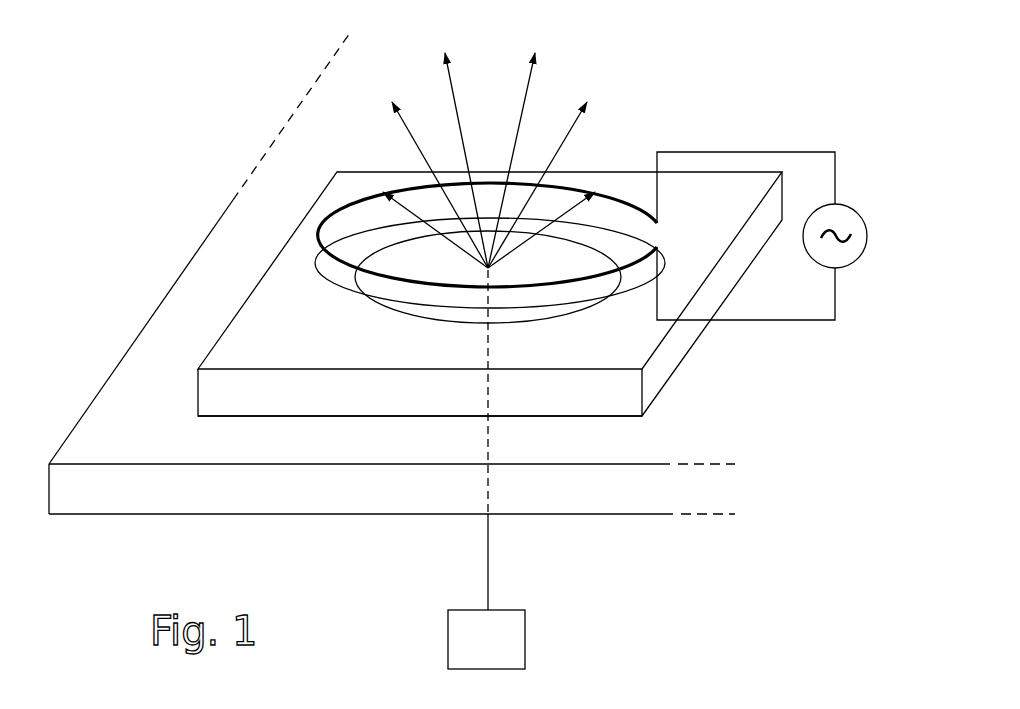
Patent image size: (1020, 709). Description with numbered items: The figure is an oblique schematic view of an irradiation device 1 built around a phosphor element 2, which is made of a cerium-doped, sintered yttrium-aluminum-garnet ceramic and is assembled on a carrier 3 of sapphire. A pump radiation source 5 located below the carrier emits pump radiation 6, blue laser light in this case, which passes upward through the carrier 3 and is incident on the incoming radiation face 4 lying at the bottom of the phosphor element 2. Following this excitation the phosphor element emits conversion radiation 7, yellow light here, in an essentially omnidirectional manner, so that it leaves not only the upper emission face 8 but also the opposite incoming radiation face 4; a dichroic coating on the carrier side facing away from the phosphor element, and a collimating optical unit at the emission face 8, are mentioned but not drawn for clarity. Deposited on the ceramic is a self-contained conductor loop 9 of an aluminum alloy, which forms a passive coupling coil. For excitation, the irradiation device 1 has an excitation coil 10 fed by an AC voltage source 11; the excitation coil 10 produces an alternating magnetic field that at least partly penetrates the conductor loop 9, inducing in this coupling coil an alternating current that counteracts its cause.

The irradiation device 1 is at (142, 107).
The phosphor element 2 is at (302, 258).
The carrier 3 is at (232, 268).
The incoming radiation face 4 is at (288, 433).
The pump radiation source 5 is at (525, 652).
The pump radiation 6 is at (488, 542).
The conversion radiation 7 is at (458, 110).
The emission face 8 is at (547, 261).
The conductor loop 9 is at (343, 280).
The excitation coil 10 is at (358, 201).
The AC voltage source 11 is at (850, 205).